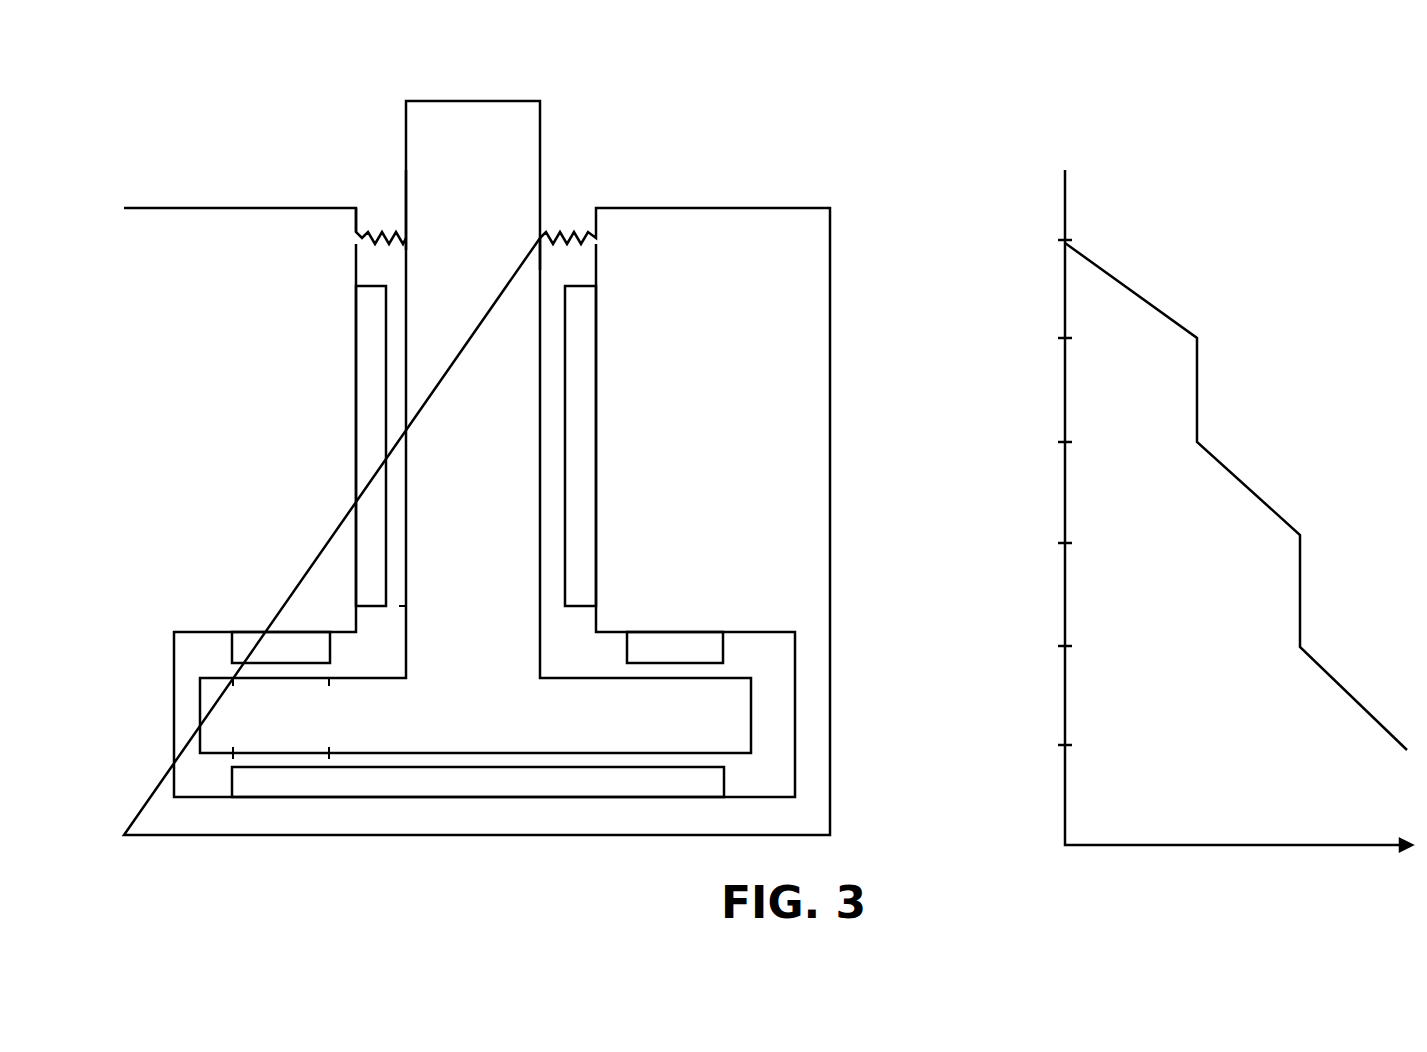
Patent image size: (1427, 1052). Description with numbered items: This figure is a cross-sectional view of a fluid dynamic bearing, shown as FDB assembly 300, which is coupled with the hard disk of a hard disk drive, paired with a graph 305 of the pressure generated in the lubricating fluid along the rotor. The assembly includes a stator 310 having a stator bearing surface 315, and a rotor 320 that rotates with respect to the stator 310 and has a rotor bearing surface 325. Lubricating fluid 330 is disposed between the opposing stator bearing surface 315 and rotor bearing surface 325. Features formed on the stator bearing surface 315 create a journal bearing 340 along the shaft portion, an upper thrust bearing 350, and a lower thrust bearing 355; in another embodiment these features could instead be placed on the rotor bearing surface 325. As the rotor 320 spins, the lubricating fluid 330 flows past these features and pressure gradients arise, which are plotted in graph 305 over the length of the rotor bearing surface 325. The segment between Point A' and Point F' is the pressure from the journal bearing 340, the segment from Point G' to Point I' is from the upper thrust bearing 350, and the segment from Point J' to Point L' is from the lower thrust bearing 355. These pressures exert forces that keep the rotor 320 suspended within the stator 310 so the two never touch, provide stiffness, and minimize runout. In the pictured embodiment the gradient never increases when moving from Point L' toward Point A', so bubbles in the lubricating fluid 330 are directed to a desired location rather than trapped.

The FDB assembly 300 is at (508, 84).
The graph 305 is at (1178, 87).
The stator 310 is at (232, 247).
The stator bearing surface 315 is at (357, 220).
The rotor 320 is at (427, 125).
The rotor bearing surface 325 is at (406, 172).
The lubricating fluid 330 is at (565, 260).
The journal bearing 340 is at (377, 442).
The upper thrust bearing 350 is at (272, 650).
The lower thrust bearing 355 is at (452, 780).